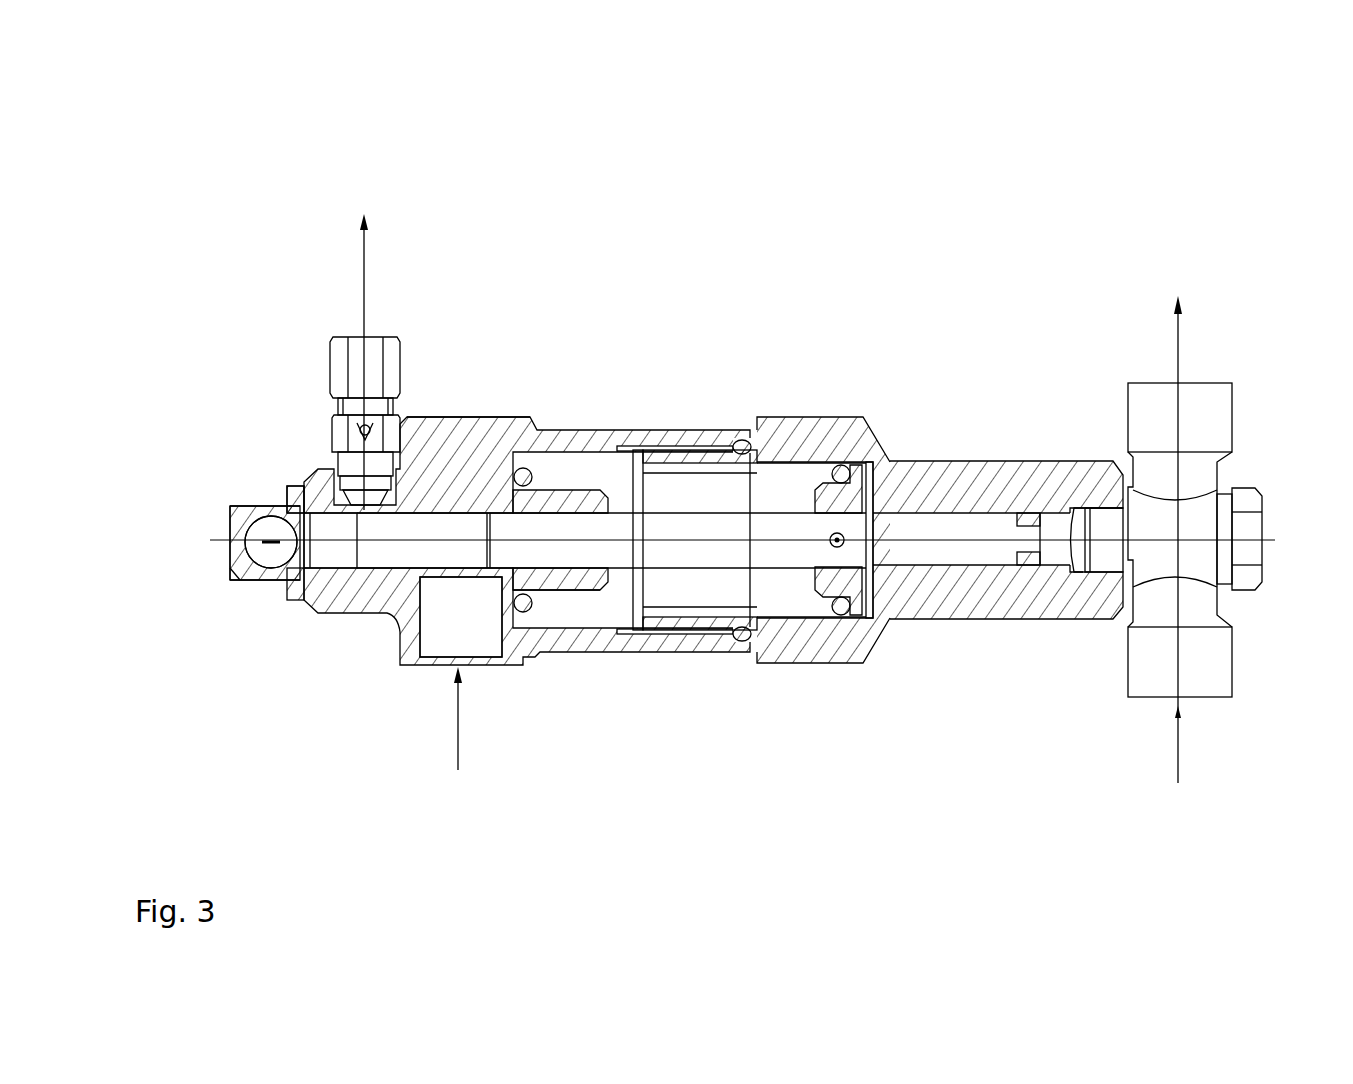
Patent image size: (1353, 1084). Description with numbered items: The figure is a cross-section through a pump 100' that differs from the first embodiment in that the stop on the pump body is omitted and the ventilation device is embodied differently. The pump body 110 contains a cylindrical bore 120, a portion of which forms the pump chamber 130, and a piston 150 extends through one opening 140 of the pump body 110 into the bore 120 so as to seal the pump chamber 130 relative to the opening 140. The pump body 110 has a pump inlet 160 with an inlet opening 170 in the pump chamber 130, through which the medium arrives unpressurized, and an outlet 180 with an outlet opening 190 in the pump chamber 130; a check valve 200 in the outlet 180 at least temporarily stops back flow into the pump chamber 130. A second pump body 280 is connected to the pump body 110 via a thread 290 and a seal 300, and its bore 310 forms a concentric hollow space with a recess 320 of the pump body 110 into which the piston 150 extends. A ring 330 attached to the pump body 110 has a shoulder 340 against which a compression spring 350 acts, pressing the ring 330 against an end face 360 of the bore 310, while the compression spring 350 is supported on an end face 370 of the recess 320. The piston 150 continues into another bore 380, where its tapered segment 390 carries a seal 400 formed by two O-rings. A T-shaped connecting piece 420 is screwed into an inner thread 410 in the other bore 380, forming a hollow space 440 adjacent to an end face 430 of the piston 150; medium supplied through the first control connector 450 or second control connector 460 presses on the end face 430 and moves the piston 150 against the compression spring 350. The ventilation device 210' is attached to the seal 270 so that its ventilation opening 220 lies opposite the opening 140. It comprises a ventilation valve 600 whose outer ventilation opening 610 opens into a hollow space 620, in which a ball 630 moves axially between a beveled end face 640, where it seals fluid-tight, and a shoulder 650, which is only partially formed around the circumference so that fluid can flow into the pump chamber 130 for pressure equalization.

The pump 100' is at (1179, 86).
The pump body 110 is at (520, 417).
The cylindrical bore 120 is at (455, 424).
The pump chamber 130 is at (457, 527).
The opening 140 is at (616, 505).
The piston 150 is at (705, 512).
The pump inlet 160 is at (482, 645).
The inlet opening 170 is at (448, 573).
The outlet 180 is at (338, 358).
The outlet opening 190 is at (367, 526).
The check valve 200 is at (347, 428).
The ventilation device 210' is at (207, 675).
The ventilation opening 220 is at (292, 567).
The seal 270 is at (295, 504).
The second pump body 280 is at (833, 417).
The thread 290 is at (705, 650).
The seal 300 is at (738, 646).
The bore 310 is at (797, 590).
The recess 320 is at (562, 625).
The ring 330 is at (858, 498).
The shoulder 340 is at (912, 620).
The compression spring 350 is at (545, 456).
The end face 360 is at (882, 503).
The end face 370 is at (523, 627).
The other bore 380 is at (990, 508).
The tapered segment 390 is at (1034, 575).
The seal 400 is at (1028, 508).
The inner thread 410 is at (1094, 508).
The T-shaped connecting piece 420 is at (1232, 413).
The end face 430 is at (1094, 531).
The hollow space 440 is at (1073, 576).
The first control connector 450 is at (1213, 697).
The second control connector 460 is at (1195, 384).
The ventilation valve 600 is at (229, 519).
The outer ventilation opening 610 is at (230, 533).
The hollow space 620 is at (230, 577).
The ball 630 is at (277, 560).
The beveled end face 640 is at (233, 511).
The shoulder 650 is at (296, 500).